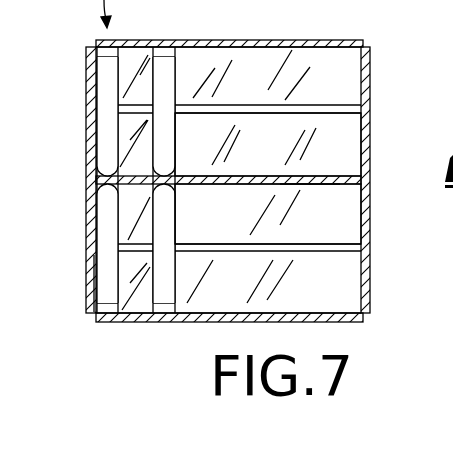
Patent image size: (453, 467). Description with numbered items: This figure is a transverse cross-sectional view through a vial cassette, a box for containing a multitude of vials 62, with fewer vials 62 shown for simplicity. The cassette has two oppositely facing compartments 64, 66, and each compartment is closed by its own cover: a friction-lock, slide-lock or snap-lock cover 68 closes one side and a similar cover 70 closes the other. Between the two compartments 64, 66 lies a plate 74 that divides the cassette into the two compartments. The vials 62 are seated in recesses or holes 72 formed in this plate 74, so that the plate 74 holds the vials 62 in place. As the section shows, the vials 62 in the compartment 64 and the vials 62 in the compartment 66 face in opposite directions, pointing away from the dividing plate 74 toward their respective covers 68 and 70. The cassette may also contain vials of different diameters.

The vials 62 is at (160, 284).
The compartment 64 is at (273, 157).
The compartment 66 is at (236, 226).
The cover 68 is at (340, 38).
The cover 70 is at (315, 321).
The recesses or holes 72 is at (335, 179).
The plate 74 is at (312, 183).